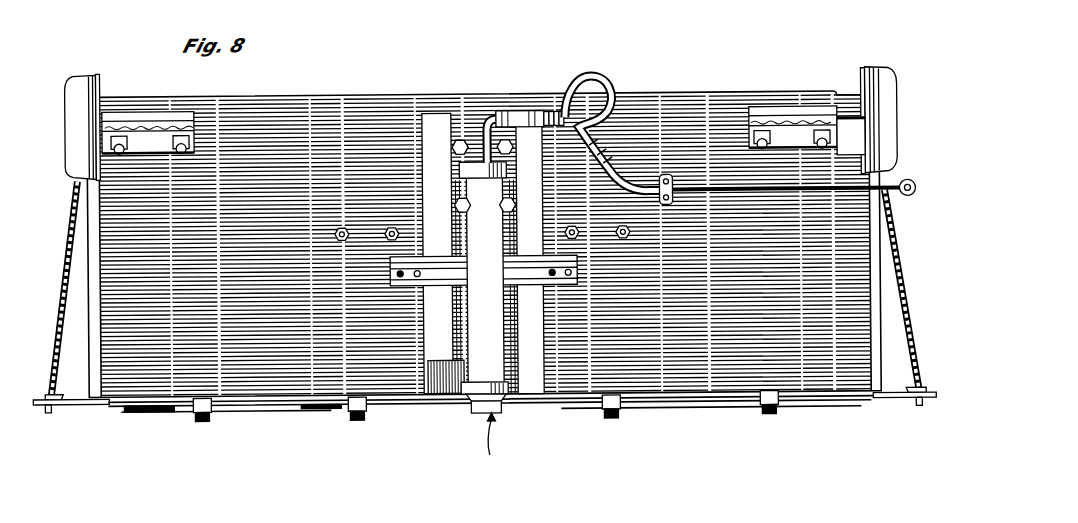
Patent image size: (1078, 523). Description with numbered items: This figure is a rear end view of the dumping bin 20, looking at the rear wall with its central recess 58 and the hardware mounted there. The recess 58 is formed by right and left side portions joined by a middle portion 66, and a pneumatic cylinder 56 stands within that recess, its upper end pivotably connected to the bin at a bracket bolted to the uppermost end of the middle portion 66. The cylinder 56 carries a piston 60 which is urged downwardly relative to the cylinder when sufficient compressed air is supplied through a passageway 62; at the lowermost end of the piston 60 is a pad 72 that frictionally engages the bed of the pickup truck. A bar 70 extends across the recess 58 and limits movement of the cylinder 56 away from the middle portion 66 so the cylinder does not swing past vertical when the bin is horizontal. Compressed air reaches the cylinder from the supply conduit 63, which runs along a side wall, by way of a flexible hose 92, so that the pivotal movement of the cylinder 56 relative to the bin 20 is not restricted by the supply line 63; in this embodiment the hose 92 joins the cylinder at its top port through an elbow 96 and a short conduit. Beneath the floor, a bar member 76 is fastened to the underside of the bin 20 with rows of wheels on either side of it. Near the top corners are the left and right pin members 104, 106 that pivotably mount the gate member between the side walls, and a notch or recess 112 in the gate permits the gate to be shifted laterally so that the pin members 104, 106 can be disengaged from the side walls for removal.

The dumping bin 20 is at (720, 84).
The pneumatic cylinder 56 is at (500, 340).
The recess 58 is at (425, 372).
The piston 60 is at (482, 395).
The passageway 62 is at (505, 112).
The conduit 63 is at (703, 192).
The middle portion 66 is at (325, 178).
The bar 70 is at (575, 283).
The pad 72 is at (503, 449).
The bar member 76 is at (296, 403).
The flexible hose 92 is at (612, 93).
The elbow 96 is at (484, 130).
The left pin member 104 is at (846, 121).
The right pin member 106 is at (118, 132).
The recess 112 is at (858, 145).